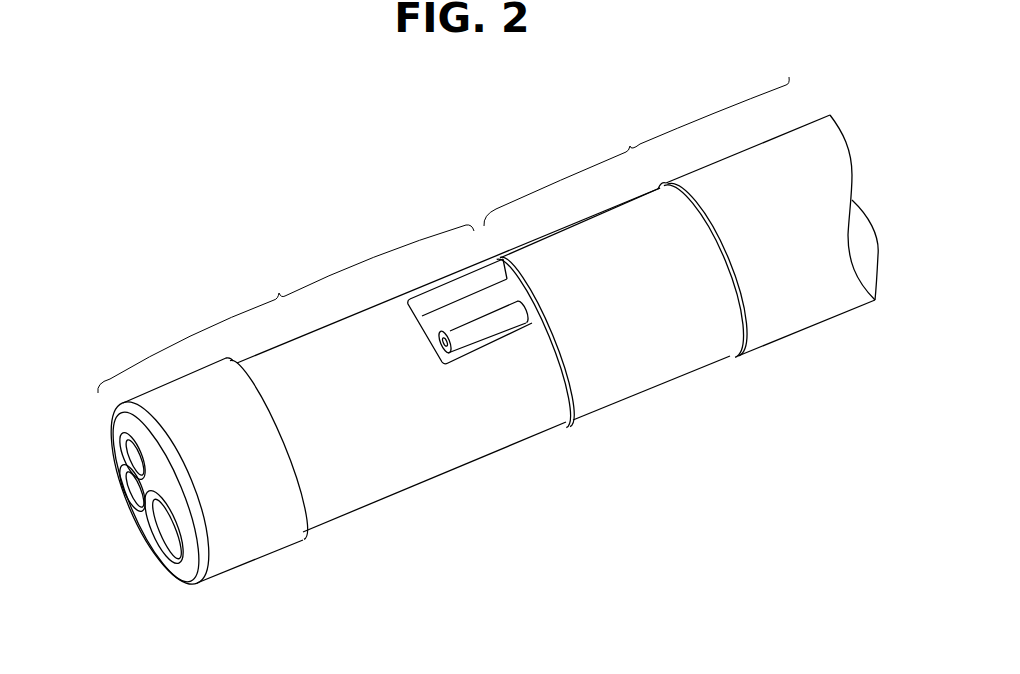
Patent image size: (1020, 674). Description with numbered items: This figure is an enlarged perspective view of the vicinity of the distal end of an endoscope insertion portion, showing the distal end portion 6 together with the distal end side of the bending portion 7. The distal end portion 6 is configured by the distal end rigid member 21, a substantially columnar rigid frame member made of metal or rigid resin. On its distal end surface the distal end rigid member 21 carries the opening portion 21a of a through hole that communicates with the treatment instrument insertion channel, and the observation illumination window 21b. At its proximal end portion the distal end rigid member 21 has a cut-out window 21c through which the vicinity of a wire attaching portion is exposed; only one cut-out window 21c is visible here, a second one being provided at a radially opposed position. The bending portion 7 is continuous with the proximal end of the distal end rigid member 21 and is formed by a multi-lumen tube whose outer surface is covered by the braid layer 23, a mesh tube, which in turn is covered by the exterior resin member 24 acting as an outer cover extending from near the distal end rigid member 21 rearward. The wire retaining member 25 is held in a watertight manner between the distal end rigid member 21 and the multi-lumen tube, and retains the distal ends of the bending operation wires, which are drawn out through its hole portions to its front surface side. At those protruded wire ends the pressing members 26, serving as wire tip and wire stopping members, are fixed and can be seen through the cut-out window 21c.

The distal end portion 6 is at (286, 309).
The bending portion 7 is at (636, 151).
The distal end rigid member 21 is at (338, 470).
The opening portion 21a is at (164, 529).
The observation illumination window 21b is at (131, 458).
The cut-out window 21c is at (507, 335).
The braid layer 23 is at (672, 357).
The exterior resin member 24 is at (790, 313).
The wire retaining member 25 is at (573, 400).
The pressing member 26 is at (474, 330).